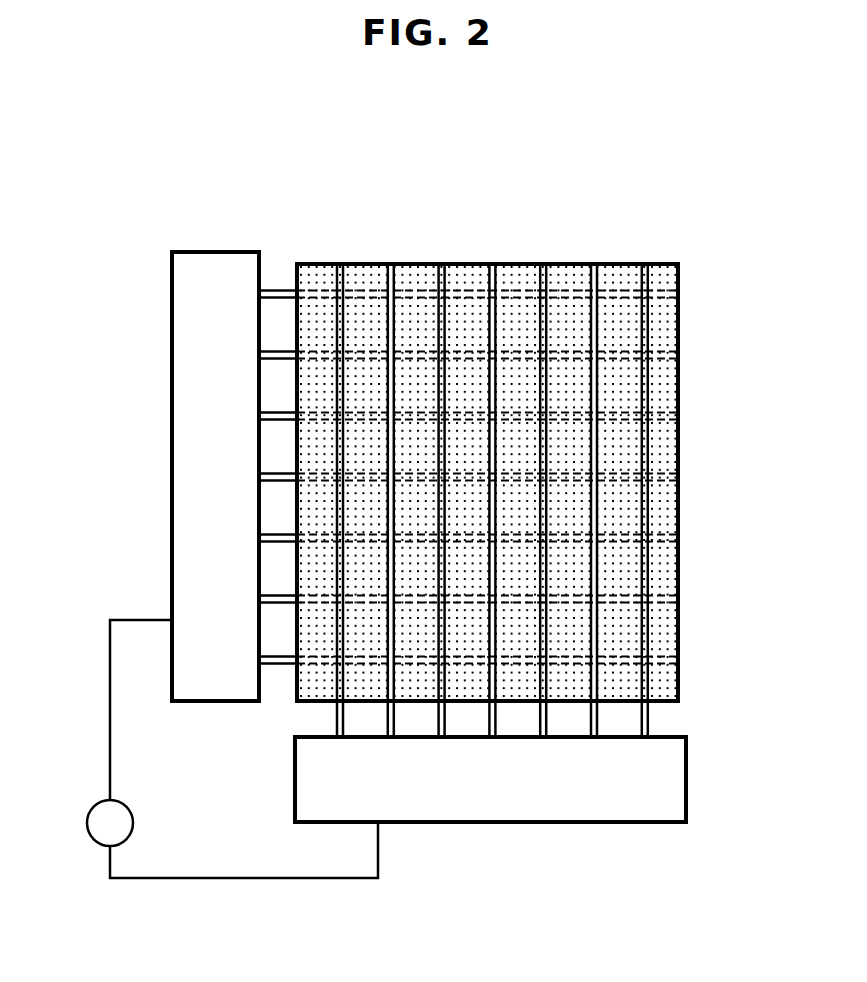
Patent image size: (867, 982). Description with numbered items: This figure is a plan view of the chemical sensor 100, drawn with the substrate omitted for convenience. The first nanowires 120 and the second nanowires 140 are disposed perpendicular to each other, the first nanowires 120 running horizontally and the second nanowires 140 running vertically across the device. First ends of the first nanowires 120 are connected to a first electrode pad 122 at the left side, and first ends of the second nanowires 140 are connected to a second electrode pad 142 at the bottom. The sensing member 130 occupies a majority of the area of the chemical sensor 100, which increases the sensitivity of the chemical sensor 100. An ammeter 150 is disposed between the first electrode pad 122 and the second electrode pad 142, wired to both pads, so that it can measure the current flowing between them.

The chemical sensor 100 is at (366, 218).
The first nanowires 120 is at (515, 290).
The first electrode pad 122 is at (169, 352).
The sensing member 130 is at (683, 322).
The second nanowires 140 is at (650, 685).
The second electrode pad 142 is at (688, 783).
The ammeter 150 is at (92, 810).